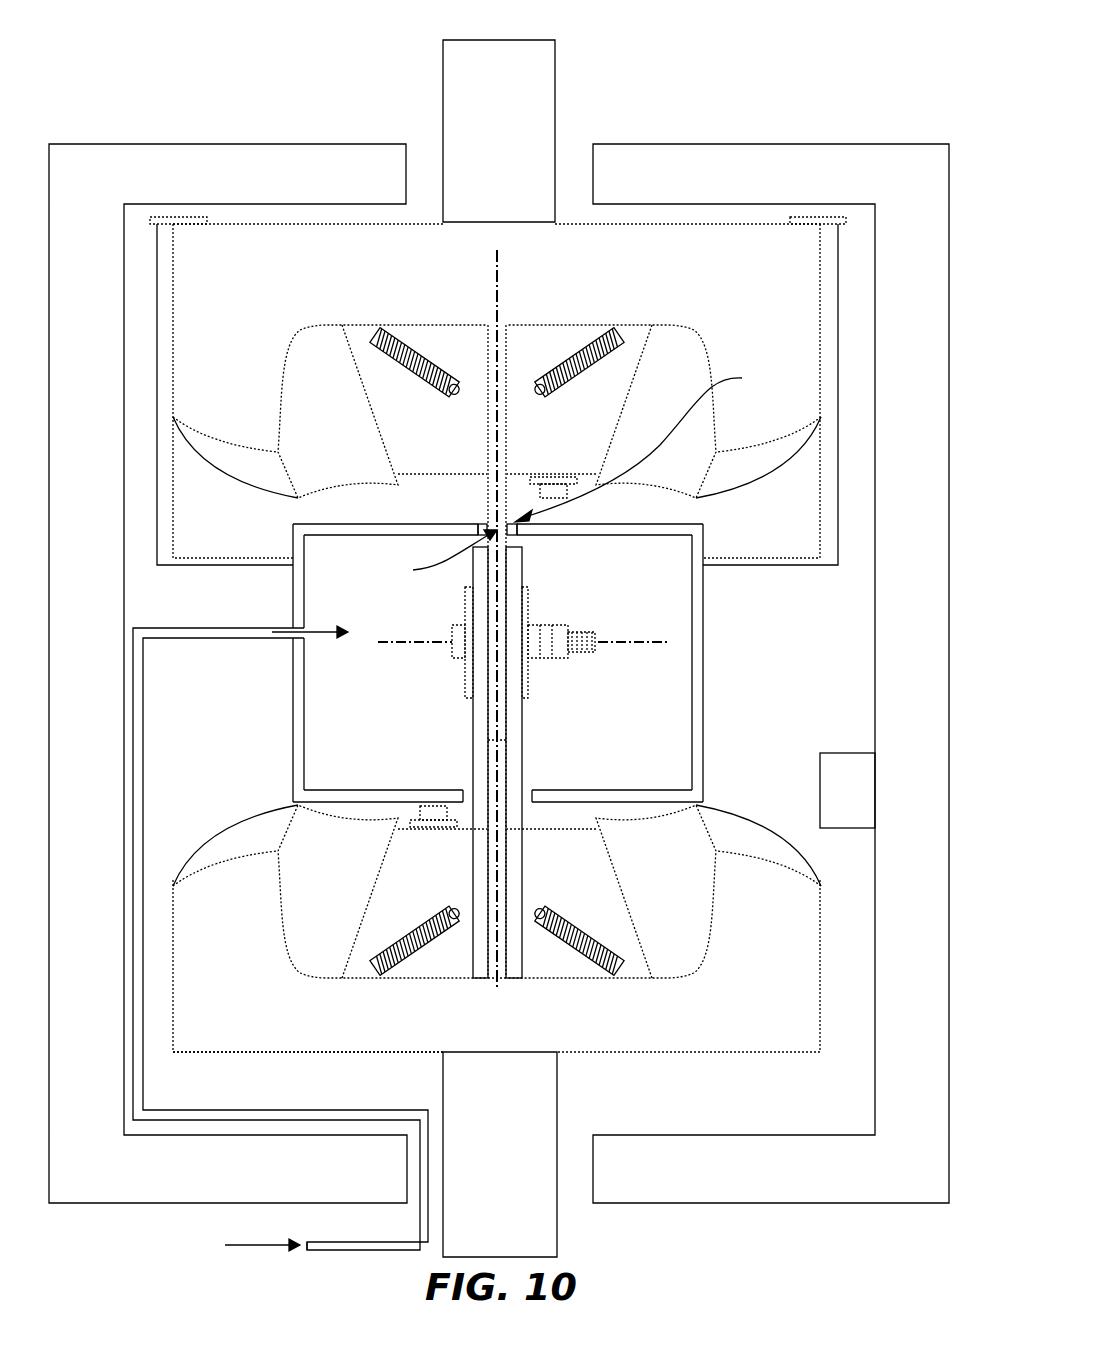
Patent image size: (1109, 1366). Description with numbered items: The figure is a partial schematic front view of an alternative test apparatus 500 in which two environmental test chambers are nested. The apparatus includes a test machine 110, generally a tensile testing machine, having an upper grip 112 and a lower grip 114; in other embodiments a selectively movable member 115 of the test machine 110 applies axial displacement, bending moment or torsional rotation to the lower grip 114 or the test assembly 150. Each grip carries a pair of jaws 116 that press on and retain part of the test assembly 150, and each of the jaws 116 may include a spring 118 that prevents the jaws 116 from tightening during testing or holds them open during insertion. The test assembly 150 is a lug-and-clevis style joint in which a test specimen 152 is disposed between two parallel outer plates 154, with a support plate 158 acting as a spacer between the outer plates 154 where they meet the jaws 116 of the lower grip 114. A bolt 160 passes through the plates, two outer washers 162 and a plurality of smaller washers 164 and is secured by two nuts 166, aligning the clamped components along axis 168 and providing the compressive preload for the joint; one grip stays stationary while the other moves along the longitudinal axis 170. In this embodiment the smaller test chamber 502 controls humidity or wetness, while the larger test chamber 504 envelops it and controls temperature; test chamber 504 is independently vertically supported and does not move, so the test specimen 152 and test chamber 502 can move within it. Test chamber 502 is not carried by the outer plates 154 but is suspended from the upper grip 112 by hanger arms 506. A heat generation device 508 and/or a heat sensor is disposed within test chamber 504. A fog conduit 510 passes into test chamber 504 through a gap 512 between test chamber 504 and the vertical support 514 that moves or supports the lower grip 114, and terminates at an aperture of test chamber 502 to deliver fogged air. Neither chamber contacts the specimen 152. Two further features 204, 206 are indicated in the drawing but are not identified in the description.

The test machine 110 is at (370, 223).
The upper grip 112 is at (735, 488).
The lower grip 114 is at (735, 820).
The selectively movable member 115 is at (713, 1050).
The jaws 116 is at (574, 881).
The spring 118 is at (588, 978).
The test assembly 150 is at (523, 565).
The test specimen 152 is at (485, 522).
The outer plates 154 is at (523, 765).
The support plate 158 is at (500, 984).
The bolt 160 is at (460, 622).
The outer washers 162 is at (528, 683).
The smaller washers 164 is at (532, 620).
The nuts 166 is at (548, 660).
The axis 168 is at (656, 640).
The longitudinal axis 170 is at (502, 270).
The flow path 204 is at (655, 448).
The flow path 206 is at (429, 559).
The test apparatus 500 is at (798, 117).
The test chamber 502 is at (700, 690).
The test chamber 504 is at (810, 175).
The hanger arms 506 is at (170, 223).
The heat generation device 508 is at (853, 778).
The fog conduit 510 is at (188, 633).
The gap 512 is at (413, 1172).
The vertical support 514 is at (540, 1190).